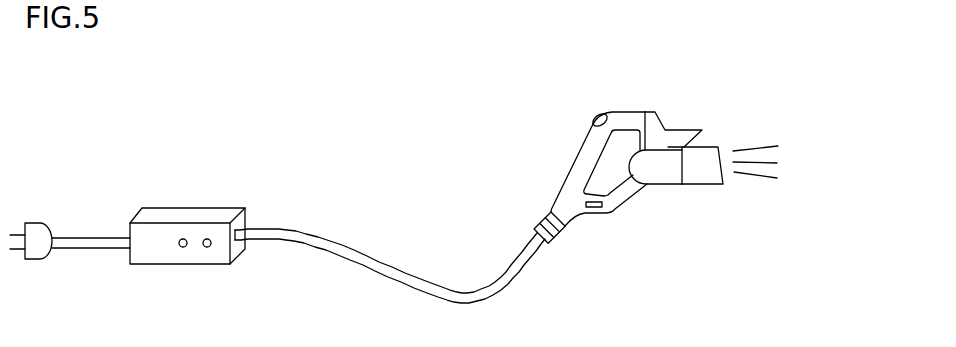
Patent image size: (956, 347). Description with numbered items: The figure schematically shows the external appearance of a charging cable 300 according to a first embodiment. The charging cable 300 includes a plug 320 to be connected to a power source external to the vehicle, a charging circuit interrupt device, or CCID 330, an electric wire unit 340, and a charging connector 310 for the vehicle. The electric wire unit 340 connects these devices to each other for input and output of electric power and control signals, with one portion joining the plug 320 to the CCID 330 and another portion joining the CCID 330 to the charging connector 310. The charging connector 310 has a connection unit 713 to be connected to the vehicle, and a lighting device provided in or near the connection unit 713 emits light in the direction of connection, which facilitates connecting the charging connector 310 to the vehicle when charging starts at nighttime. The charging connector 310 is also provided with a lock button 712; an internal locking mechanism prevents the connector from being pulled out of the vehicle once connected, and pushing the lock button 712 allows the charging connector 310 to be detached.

The charging cable 300 is at (190, 72).
The charging connector 310 is at (635, 112).
The plug 320 is at (33, 222).
The charging circuit interrupt device (CCID) 330 is at (178, 265).
The electric wire unit 340 is at (393, 273).
The lock button 712 is at (598, 115).
The connection unit 713 is at (725, 142).